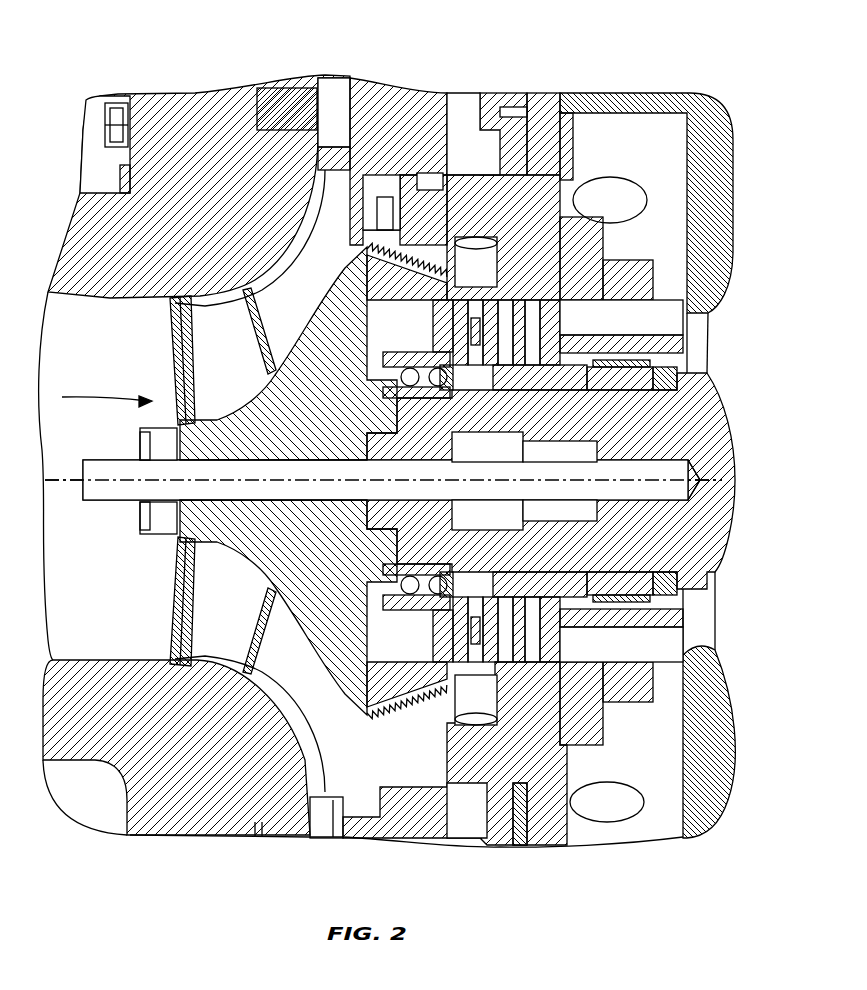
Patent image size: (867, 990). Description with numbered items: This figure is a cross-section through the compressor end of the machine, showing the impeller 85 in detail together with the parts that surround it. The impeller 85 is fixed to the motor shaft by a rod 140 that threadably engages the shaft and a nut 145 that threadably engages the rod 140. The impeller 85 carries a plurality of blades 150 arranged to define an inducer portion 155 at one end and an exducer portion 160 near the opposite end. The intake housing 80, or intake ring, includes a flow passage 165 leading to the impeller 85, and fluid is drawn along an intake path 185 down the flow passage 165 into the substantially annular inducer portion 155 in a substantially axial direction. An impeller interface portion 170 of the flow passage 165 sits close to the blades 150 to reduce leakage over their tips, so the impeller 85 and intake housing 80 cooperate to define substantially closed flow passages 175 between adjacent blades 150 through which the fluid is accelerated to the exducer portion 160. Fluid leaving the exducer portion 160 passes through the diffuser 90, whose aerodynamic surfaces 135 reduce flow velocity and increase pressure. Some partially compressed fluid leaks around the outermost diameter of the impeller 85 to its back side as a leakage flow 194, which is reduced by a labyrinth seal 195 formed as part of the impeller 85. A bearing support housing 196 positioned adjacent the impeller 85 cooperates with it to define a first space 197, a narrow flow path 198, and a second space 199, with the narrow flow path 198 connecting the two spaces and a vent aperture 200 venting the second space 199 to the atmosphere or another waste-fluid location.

The intake housing 80 is at (187, 120).
The diffuser 90 is at (285, 105).
The aerodynamic surfaces 135 is at (333, 107).
The impeller 85 is at (371, 198).
The leakage flow 194 is at (390, 150).
The bearing support housing 196 is at (560, 110).
The vent aperture 200 is at (475, 240).
The second space 199 is at (577, 217).
The seal 195 is at (383, 270).
The narrow flow path 198 is at (448, 292).
The first space 197 is at (370, 320).
The flow passage 165 is at (110, 299).
The inducer portion 155 is at (162, 362).
The intake path 185 is at (112, 400).
The rod 140 is at (92, 496).
The nut 145 is at (157, 513).
The flow passages 175 is at (208, 575).
The blades 150 is at (193, 632).
The impeller interface portion 170 is at (258, 830).
The exducer portion 160 is at (322, 832).